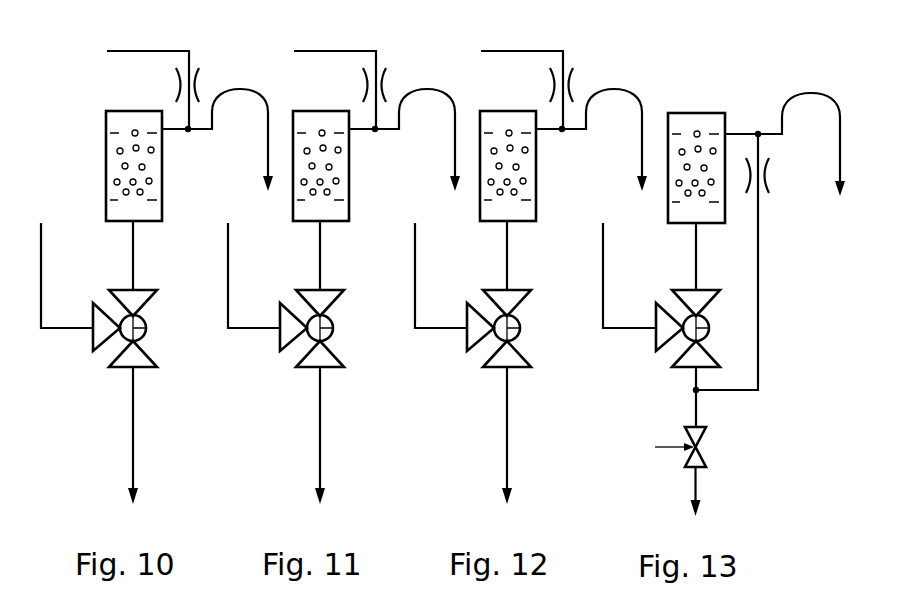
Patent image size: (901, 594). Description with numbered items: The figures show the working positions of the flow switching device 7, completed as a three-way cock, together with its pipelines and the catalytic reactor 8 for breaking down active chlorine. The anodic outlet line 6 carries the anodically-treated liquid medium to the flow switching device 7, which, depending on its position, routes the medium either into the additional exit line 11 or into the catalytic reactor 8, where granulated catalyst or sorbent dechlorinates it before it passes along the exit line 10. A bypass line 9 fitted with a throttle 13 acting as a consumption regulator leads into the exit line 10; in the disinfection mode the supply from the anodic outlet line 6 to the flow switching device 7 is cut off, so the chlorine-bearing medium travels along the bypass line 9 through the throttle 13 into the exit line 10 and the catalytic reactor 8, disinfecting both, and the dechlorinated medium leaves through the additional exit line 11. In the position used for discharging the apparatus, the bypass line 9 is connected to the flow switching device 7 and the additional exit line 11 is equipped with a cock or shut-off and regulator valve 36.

In FIG. 10, the anodic outlet line 6 is at (41, 285).
In FIG. 11, the anodic outlet line 6 is at (262, 275).
In FIG. 12, the anodic outlet line 6 is at (449, 275).
In FIG. 13, the anodic outlet line 6 is at (603, 285).
In FIG. 10, the flow switching device 7 is at (120, 338).
In FIG. 11, the flow switching device 7 is at (276, 308).
In FIG. 12, the flow switching device 7 is at (463, 308).
In FIG. 13, the flow switching device 7 is at (683, 338).
In FIG. 10, the catalytic reactor 8 is at (140, 212).
In FIG. 11, the catalytic reactor 8 is at (334, 193).
In FIG. 12, the catalytic reactor 8 is at (521, 193).
In FIG. 13, the catalytic reactor 8 is at (702, 215).
In FIG. 10, the bypass line 9 is at (162, 52).
In FIG. 11, the bypass line 9 is at (324, 91).
In FIG. 12, the bypass line 9 is at (511, 91).
In FIG. 13, the bypass line 9 is at (760, 302).
In FIG. 10, the exit line 10 is at (264, 101).
In FIG. 11, the exit line 10 is at (404, 140).
In FIG. 12, the exit line 10 is at (591, 140).
In FIG. 13, the exit line 10 is at (838, 132).
In FIG. 10, the additional exit line 11 is at (130, 470).
In FIG. 11, the additional exit line 11 is at (266, 435).
In FIG. 12, the additional exit line 11 is at (453, 435).
In FIG. 13, the additional exit line 11 is at (693, 485).
In FIG. 10, the throttle 13 is at (198, 86).
In FIG. 11, the throttle 13 is at (403, 61).
In FIG. 12, the throttle 13 is at (590, 61).
In FIG. 13, the throttle 13 is at (771, 181).
In FIG. 13, the shut-off and regulator valve 36 is at (700, 450).